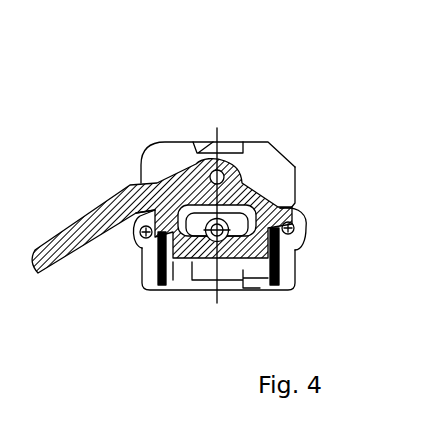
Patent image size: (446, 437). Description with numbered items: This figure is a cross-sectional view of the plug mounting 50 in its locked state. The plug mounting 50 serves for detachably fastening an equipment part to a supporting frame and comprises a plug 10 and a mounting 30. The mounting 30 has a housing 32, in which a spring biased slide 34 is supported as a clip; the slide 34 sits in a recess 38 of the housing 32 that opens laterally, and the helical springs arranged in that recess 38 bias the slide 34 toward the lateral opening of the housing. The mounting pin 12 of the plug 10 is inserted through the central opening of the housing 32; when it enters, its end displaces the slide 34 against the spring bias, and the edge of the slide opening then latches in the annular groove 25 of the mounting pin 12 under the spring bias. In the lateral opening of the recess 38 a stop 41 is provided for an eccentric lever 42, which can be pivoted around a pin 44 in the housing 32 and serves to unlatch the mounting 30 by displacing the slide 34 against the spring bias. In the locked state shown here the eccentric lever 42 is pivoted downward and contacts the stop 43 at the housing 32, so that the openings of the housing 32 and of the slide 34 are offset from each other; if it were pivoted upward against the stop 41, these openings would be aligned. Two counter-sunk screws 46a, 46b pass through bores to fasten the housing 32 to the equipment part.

The plug mounting 50 is at (176, 67).
The mounting 30 is at (308, 257).
The recess 38 is at (295, 163).
The housing 32 is at (296, 172).
The pin 44 is at (273, 172).
The stop 41 is at (220, 150).
The counter-sunk screw 46a is at (143, 243).
The counter-sunk screw 46b is at (300, 220).
The slide 34 is at (167, 281).
The plug 10 is at (239, 219).
The eccentric lever 42 is at (75, 223).
The stop 43 is at (139, 238).
The annular groove 25 is at (210, 243).
The mounting pin 12 is at (224, 243).